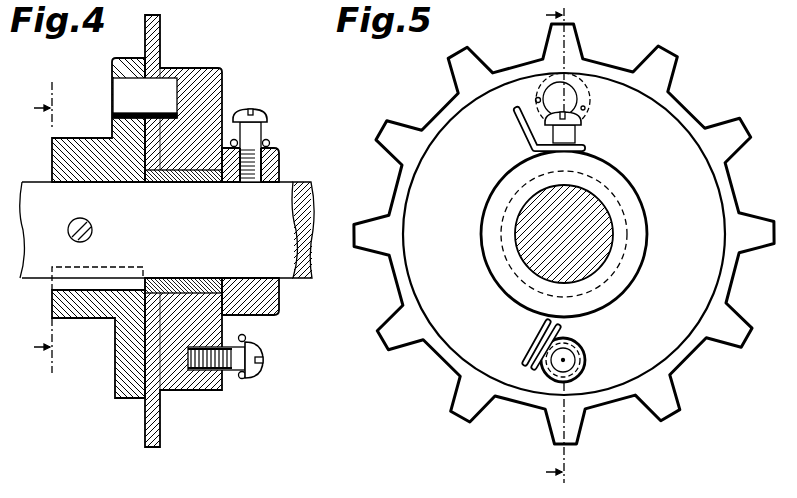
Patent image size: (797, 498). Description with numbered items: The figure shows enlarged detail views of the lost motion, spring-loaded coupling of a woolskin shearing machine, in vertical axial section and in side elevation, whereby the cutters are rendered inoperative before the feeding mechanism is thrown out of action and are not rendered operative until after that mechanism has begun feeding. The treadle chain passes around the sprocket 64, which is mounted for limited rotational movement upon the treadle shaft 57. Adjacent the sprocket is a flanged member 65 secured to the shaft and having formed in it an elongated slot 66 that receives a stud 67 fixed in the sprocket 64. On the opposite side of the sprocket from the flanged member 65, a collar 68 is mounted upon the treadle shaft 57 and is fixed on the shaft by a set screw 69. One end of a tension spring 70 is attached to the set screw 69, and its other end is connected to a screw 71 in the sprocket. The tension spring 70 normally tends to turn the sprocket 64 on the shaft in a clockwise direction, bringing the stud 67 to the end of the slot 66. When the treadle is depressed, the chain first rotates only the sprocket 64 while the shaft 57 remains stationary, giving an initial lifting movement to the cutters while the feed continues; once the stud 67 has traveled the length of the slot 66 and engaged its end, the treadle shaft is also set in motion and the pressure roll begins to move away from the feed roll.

In FIG. 4, the treadle shaft 57 is at (294, 188).
In FIG. 5, the treadle shaft 57 is at (527, 263).
In FIG. 4, the sprocket 64 is at (161, 60).
In FIG. 5, the sprocket 64 is at (703, 132).
In FIG. 4, the flanged member 65 is at (70, 138).
In FIG. 5, the elongated slot 66 is at (535, 100).
In FIG. 4, the stud 67 is at (128, 87).
In FIG. 5, the stud 67 is at (573, 88).
In FIG. 4, the collar 68 is at (282, 163).
In FIG. 5, the collar 68 is at (628, 202).
In FIG. 4, the set screw 69 is at (257, 118).
In FIG. 5, the set screw 69 is at (576, 133).
In FIG. 4, the tension spring 70 is at (247, 338).
In FIG. 5, the tension spring 70 is at (516, 113).
In FIG. 4, the screw 71 is at (253, 374).
In FIG. 5, the screw 71 is at (562, 365).